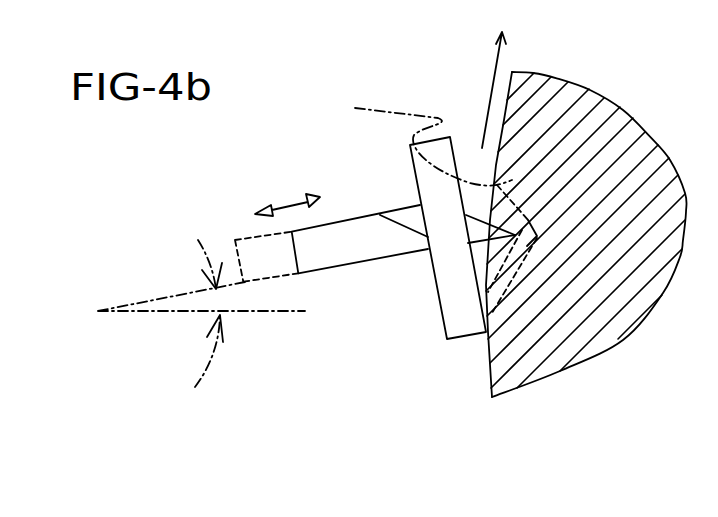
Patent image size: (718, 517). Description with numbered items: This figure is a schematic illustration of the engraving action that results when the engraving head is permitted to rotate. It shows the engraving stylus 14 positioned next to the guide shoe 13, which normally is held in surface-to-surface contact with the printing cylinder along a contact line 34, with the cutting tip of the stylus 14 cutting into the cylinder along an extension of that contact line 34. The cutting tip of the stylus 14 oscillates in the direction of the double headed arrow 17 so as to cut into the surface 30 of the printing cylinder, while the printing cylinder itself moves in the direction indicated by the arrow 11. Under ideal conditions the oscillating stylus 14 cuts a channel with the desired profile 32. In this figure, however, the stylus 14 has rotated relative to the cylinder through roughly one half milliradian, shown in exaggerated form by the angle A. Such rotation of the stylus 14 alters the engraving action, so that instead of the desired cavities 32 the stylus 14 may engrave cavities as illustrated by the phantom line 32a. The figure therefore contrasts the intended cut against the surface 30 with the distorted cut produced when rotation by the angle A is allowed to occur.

The arrow 11 is at (512, 72).
The guide shoe 13 is at (450, 285).
The engraving stylus 14 is at (322, 257).
The double headed arrow 17 is at (290, 207).
The surface 30 is at (342, 0).
The profile 32 is at (412, 139).
The phantom line 32a is at (466, 215).
The contact line 34 is at (486, 333).
The angle A is at (201, 301).